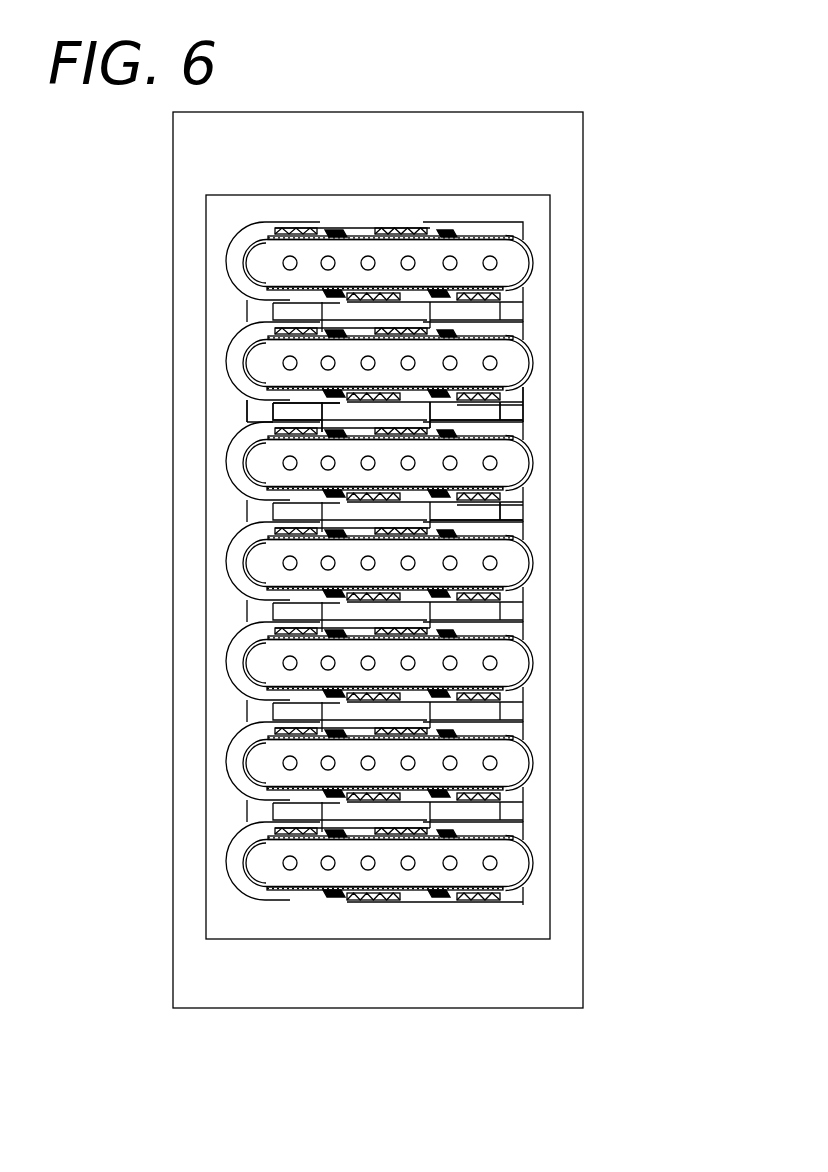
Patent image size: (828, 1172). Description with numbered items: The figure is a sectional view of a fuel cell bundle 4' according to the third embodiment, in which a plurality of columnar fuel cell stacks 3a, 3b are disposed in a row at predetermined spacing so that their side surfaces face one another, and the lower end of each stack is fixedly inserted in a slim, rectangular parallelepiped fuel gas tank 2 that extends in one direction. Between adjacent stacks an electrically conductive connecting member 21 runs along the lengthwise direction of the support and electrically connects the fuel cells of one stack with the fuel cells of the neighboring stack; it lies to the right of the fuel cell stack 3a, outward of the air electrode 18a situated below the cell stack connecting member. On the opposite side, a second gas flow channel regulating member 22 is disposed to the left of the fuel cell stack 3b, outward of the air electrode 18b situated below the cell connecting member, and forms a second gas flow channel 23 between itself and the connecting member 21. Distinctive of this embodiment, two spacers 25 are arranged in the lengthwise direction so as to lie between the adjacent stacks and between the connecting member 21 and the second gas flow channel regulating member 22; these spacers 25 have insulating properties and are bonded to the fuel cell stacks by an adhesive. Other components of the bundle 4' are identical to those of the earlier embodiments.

The fuel gas tank 2 is at (535, 138).
The fuel cell stack 3a is at (540, 347).
The fuel cell stack 3b is at (220, 493).
The fuel cell bundle 4' is at (449, 863).
The air electrode 18a is at (522, 398).
The air electrode 18b is at (258, 427).
The connecting member 21 is at (515, 411).
The second gas flow channel regulating member 22 is at (262, 412).
The second gas flow channel 23 is at (473, 512).
The spacer 25 is at (440, 412).